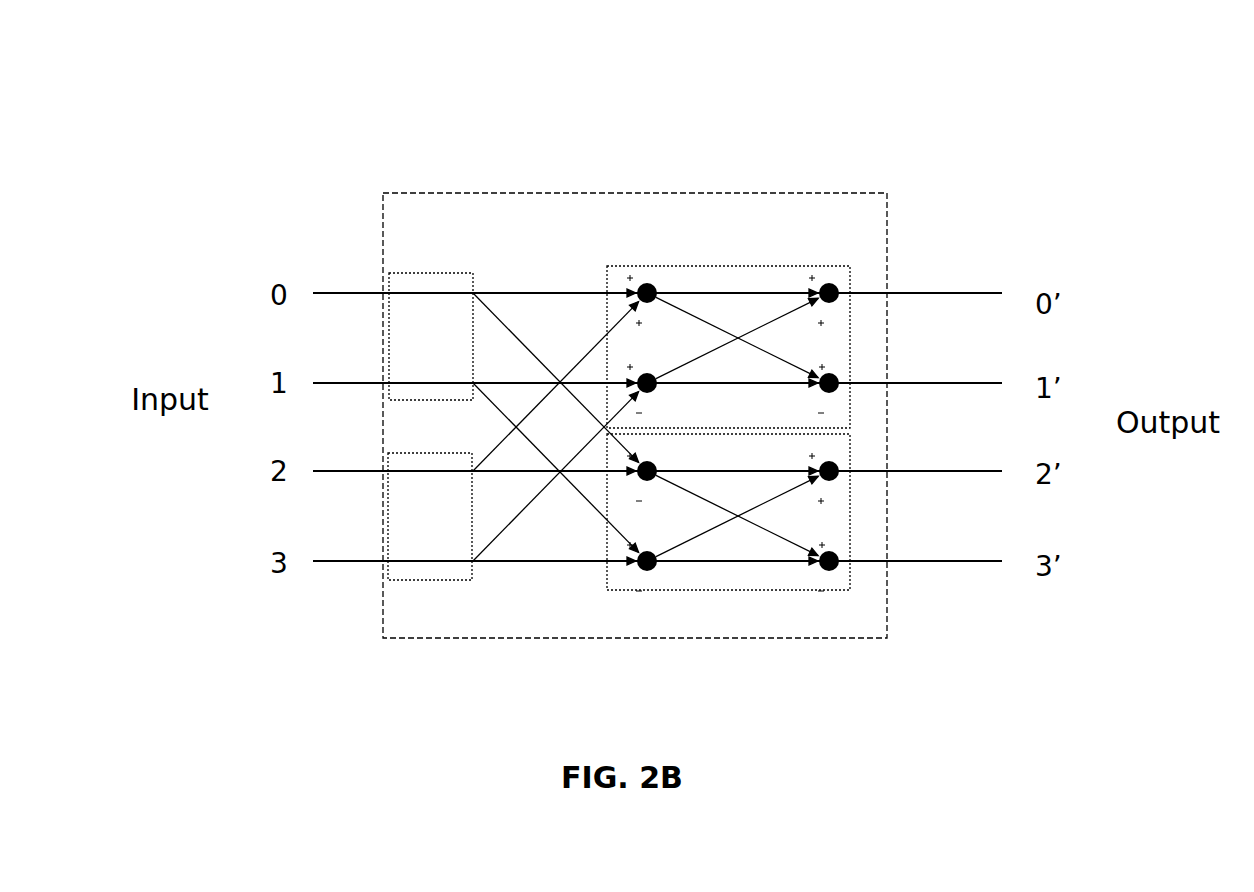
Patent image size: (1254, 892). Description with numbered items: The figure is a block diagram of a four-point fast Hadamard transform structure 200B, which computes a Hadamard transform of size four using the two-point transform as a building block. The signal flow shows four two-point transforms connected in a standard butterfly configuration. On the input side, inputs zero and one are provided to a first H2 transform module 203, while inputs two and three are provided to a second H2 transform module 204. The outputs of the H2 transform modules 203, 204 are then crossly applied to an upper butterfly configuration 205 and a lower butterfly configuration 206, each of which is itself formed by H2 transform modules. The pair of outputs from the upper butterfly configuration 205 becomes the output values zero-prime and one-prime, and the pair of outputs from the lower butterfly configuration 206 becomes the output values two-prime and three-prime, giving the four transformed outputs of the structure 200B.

The 4-point FHT structure 200B is at (272, 80).
The H2 transform module 203 is at (430, 273).
The H2 transform module 204 is at (420, 578).
The upper butterfly configuration 205 is at (715, 266).
The lower butterfly configuration 206 is at (710, 590).